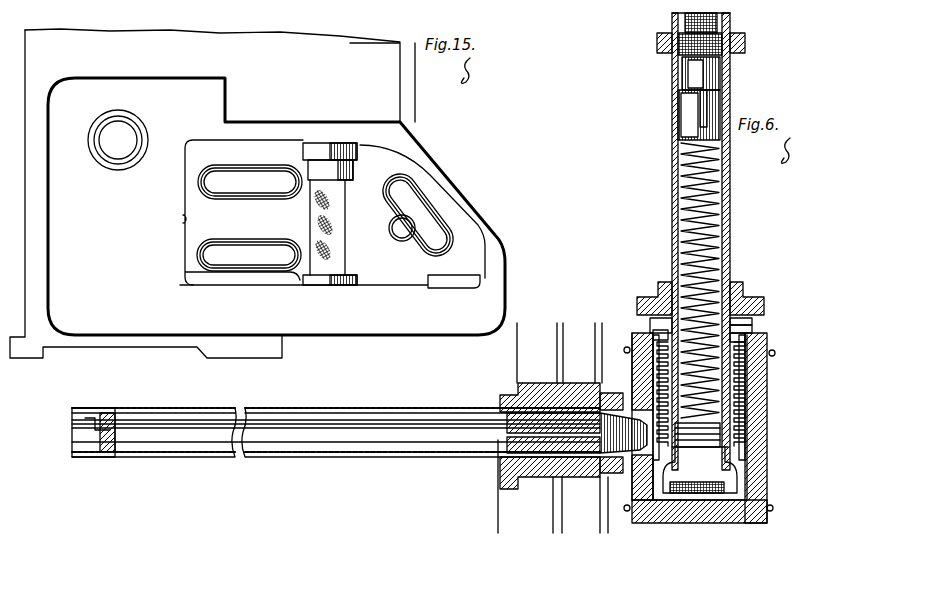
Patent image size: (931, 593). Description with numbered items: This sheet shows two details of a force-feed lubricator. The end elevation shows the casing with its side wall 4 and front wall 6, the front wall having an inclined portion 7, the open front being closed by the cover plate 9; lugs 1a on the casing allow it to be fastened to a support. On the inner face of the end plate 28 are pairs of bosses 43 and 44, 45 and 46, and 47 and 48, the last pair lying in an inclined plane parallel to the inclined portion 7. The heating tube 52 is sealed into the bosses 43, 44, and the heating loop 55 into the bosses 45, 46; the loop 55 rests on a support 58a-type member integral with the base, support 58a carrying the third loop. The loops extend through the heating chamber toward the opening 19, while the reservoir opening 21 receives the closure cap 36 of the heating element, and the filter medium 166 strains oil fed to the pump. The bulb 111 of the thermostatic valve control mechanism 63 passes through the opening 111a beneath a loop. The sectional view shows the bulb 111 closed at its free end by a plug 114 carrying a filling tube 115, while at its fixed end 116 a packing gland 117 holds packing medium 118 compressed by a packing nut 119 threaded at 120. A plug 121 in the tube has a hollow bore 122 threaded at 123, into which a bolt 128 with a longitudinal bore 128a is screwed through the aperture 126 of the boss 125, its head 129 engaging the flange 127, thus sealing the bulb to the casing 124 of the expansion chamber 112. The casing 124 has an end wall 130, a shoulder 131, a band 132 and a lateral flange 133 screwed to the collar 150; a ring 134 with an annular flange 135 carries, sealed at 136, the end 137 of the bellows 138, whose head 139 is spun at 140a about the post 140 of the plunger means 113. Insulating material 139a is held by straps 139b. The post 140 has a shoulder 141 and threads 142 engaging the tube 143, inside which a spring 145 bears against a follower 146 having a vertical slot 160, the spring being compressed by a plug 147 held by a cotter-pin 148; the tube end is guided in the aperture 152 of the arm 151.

In FIG. 15, the side wall 4 is at (385, 80).
In FIG. 15, the cover plate 9 is at (405, 98).
In FIG. 15, the end plate 28 is at (383, 157).
In FIG. 6, the end plate 28 is at (548, 365).
In FIG. 15, the boss 47 is at (403, 173).
In FIG. 15, the inclined portion of front wall 7 is at (475, 193).
In FIG. 15, the boss 48 is at (458, 252).
In FIG. 15, the front wall 6 is at (498, 248).
In FIG. 15, the support 58a is at (460, 277).
In FIG. 15, the heating tube or loop 55 is at (410, 265).
In FIG. 15, the filter medium 166 is at (335, 233).
In FIG. 15, the bulb 111 is at (393, 223).
In FIG. 6, the bulb 111 is at (352, 445).
In FIG. 15, the boss 46 is at (292, 238).
In FIG. 15, the boss 45 is at (196, 251).
In FIG. 15, the opening 19 is at (182, 222).
In FIG. 15, the heating tube 52 is at (245, 183).
In FIG. 15, the boss 43 is at (204, 172).
In FIG. 15, the boss 44 is at (290, 163).
In FIG. 15, the closure and sealing cap 36 is at (115, 152).
In FIG. 15, the opening 21 is at (143, 150).
In FIG. 15, the lugs 1a is at (190, 350).
In FIG. 6, the cotter-pin 148 is at (680, 22).
In FIG. 6, the arm 151 is at (660, 45).
In FIG. 6, the guide aperture 152 is at (745, 48).
In FIG. 6, the plug 147 is at (682, 73).
In FIG. 6, the vertical slot 160 is at (700, 103).
In FIG. 6, the follower member 146 is at (680, 125).
In FIG. 6, the plunger means 113 is at (733, 200).
In FIG. 6, the tube 143 is at (727, 250).
In FIG. 6, the spring 145 is at (682, 243).
In FIG. 6, the collar 150 is at (660, 290).
In FIG. 6, the straps 139b is at (803, 508).
In FIG. 6, the annular flange 135 is at (657, 327).
In FIG. 6, the ring 134 is at (647, 333).
In FIG. 6, the sealed joint 136 is at (745, 297).
In FIG. 6, the lateral flange 133 is at (757, 318).
In FIG. 6, the band 132 is at (755, 325).
In FIG. 6, the shoulder 131 is at (755, 333).
In FIG. 6, the bellows end 137 is at (760, 350).
In FIG. 6, the expansible-collapsible element 138 is at (750, 372).
In FIG. 6, the expansion chamber 112 is at (770, 395).
In FIG. 6, the thermostatic valve control mechanism 63 is at (772, 420).
In FIG. 6, the threads 142 is at (738, 432).
In FIG. 6, the shoulder 141 is at (745, 443).
In FIG. 6, the casing 124 is at (740, 470).
In FIG. 6, the insulating material 139a is at (758, 487).
In FIG. 6, the spun joint 140a is at (770, 515).
In FIG. 6, the post 140 is at (760, 522).
In FIG. 6, the head 139 is at (718, 497).
In FIG. 6, the end wall 130 is at (700, 523).
In FIG. 6, the head 129 is at (663, 523).
In FIG. 6, the boss 125 is at (640, 523).
In FIG. 6, the bolt 128 is at (633, 523).
In FIG. 6, the longitudinal bore 128a is at (605, 473).
In FIG. 6, the internally threaded end 123 is at (612, 470).
In FIG. 6, the packing nut 119 is at (567, 478).
In FIG. 6, the packing medium 118 is at (553, 477).
In FIG. 6, the fixed end 116 is at (535, 480).
In FIG. 6, the opening 111a is at (512, 457).
In FIG. 6, the plug 121 is at (507, 450).
In FIG. 6, the hollow bore 122 is at (508, 407).
In FIG. 6, the packing gland 117 is at (505, 385).
In FIG. 6, the flange 127 is at (625, 350).
In FIG. 6, the threads 120 is at (593, 375).
In FIG. 6, the aperture 126 is at (612, 392).
In FIG. 6, the plug 114 is at (103, 409).
In FIG. 6, the filling tube 115 is at (87, 440).